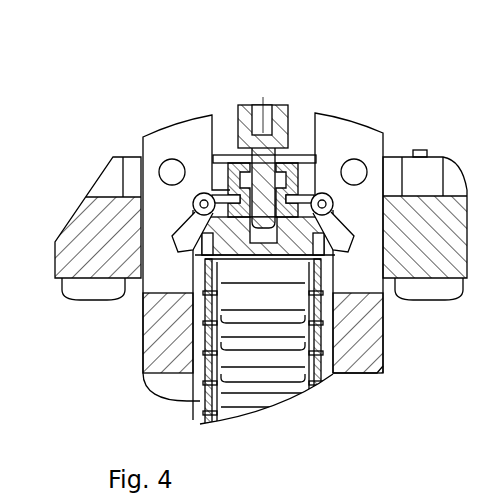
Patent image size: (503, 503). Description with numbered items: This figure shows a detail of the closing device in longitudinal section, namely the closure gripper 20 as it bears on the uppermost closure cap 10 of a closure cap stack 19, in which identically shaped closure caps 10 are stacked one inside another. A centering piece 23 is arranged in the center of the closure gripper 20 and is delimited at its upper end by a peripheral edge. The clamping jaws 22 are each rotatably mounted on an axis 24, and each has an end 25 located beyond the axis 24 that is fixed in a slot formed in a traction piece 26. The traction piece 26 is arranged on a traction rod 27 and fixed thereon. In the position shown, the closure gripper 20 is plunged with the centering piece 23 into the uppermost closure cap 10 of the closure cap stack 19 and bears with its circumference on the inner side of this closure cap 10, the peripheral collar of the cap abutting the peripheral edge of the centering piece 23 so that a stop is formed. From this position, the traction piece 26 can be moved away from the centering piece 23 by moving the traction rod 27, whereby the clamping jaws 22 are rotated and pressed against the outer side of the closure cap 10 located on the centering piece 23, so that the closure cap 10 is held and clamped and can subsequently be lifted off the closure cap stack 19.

The closure cap 10 is at (203, 260).
The closure cap stack 19 is at (203, 385).
The closure gripper 20 is at (281, 258).
The clamping jaws 22 is at (173, 240).
The centering piece 23 is at (298, 240).
The axis 24 is at (197, 200).
The end 25 is at (222, 200).
The traction piece 26 is at (233, 197).
The traction rod 27 is at (287, 120).